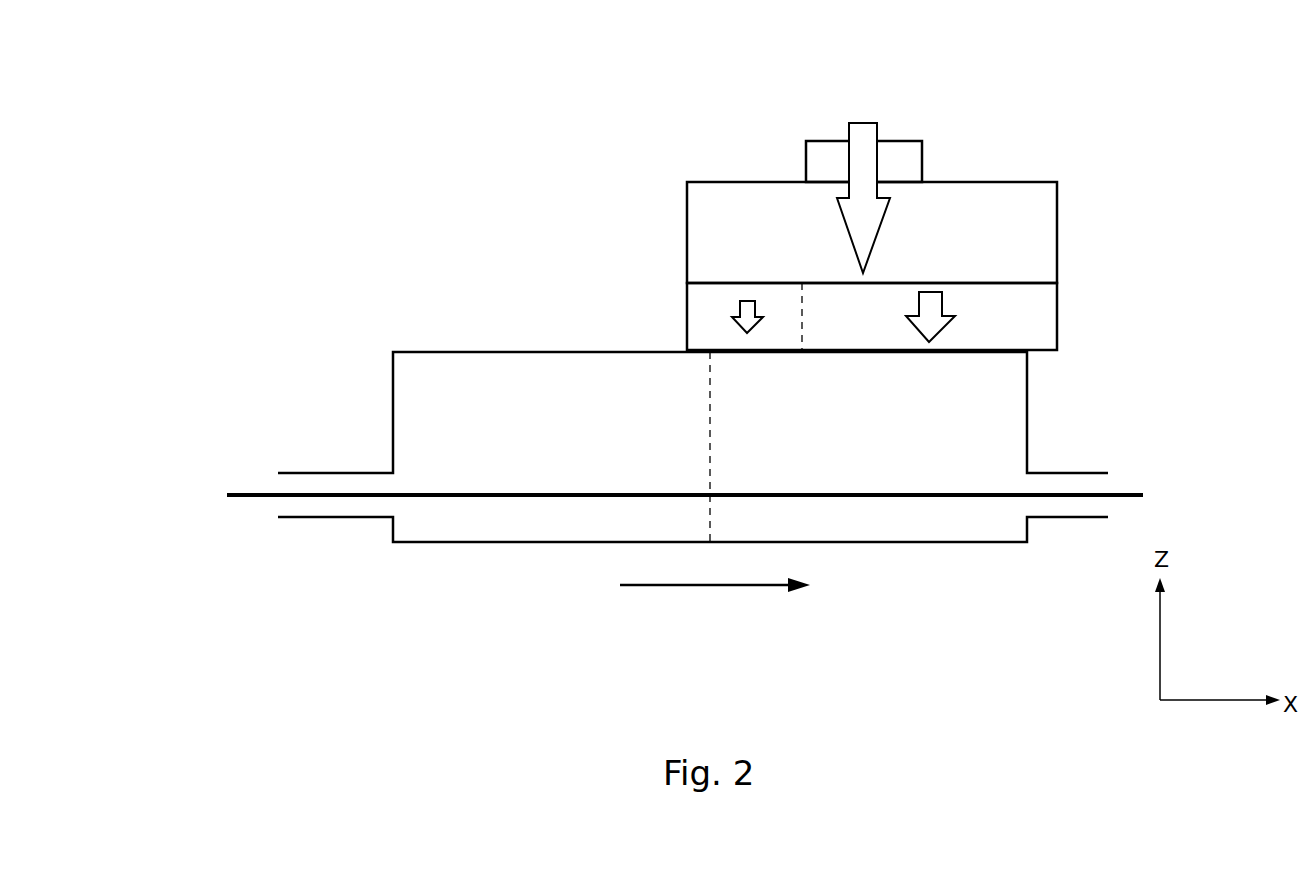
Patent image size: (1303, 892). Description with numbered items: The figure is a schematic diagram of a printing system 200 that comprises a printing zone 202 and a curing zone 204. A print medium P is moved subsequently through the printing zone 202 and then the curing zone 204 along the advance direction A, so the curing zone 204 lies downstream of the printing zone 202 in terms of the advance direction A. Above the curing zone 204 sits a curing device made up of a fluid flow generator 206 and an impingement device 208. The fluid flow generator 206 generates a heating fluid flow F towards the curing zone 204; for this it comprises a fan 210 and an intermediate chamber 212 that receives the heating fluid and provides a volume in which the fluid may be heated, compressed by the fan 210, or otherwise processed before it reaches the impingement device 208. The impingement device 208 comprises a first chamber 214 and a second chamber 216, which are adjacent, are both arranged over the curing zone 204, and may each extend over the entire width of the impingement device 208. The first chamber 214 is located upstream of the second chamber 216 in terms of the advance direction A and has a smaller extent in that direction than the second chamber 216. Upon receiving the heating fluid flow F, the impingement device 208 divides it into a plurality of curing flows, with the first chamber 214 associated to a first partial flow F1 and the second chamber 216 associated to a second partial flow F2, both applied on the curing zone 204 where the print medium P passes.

The printing system 200 is at (518, 156).
The printing zone 202 is at (577, 441).
The curing zone 204 is at (962, 458).
The fluid flow generator 206 is at (1133, 128).
The impingement device 208 is at (1040, 340).
The fan 210 is at (907, 153).
The intermediate chamber 212 is at (1013, 230).
The first chamber 214 is at (778, 337).
The second chamber 216 is at (855, 337).
The heating fluid flow F is at (862, 157).
The first partial flow F1 is at (739, 306).
The second partial flow F2 is at (937, 302).
The print medium P is at (227, 495).
The advance direction A is at (698, 587).